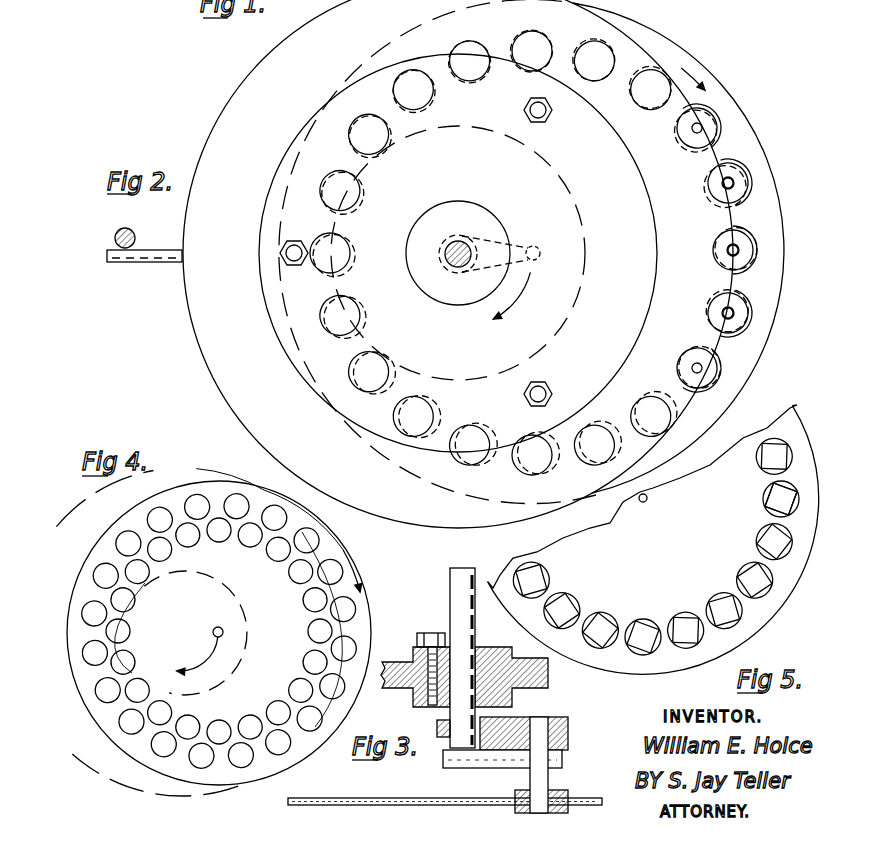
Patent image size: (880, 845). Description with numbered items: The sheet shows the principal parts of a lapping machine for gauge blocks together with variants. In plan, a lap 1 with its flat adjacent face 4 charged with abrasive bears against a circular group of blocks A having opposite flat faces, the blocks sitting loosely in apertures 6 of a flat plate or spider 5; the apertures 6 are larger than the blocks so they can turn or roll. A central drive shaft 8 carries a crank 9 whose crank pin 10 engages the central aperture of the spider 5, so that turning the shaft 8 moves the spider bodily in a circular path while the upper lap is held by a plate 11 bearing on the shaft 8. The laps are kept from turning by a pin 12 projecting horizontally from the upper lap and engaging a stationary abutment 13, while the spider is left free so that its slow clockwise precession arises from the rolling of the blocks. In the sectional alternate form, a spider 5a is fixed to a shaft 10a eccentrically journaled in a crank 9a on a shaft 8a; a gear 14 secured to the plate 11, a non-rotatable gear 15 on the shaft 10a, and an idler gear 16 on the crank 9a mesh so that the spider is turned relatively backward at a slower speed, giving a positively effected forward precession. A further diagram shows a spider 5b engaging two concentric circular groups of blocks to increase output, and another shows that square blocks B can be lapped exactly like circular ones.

In FIG. 2, the lap 1 is at (262, 110).
In FIG. 4, the adjacent face 4 is at (196, 470).
In FIG. 2, the spider 5 is at (712, 91).
In FIG. 5, the spider 5 is at (793, 424).
In FIG. 3, the spider 5a is at (388, 798).
In FIG. 4, the spider 5b is at (349, 557).
In FIG. 2, the apertures 6 is at (713, 112).
In FIG. 5, the apertures 6 is at (748, 613).
In FIG. 2, the blocks A is at (714, 128).
In FIG. 5, the square blocks B is at (763, 581).
In FIG. 2, the central drive shaft 8 is at (467, 241).
In FIG. 3, the shaft 8a is at (452, 612).
In FIG. 2, the crank 9 is at (512, 232).
In FIG. 3, the crank 9a is at (525, 768).
In FIG. 2, the crank pin 10 is at (540, 250).
In FIG. 3, the shaft 10a is at (552, 778).
In FIG. 2, the plate 11 is at (278, 208).
In FIG. 3, the plate 11 is at (532, 685).
In FIG. 2, the pin 12 is at (163, 263).
In FIG. 2, the stationary abutment 13 is at (115, 238).
In FIG. 3, the gear 14 is at (437, 723).
In FIG. 3, the non-rotatable gear 15 is at (568, 733).
In FIG. 3, the idler gear 16 is at (485, 767).